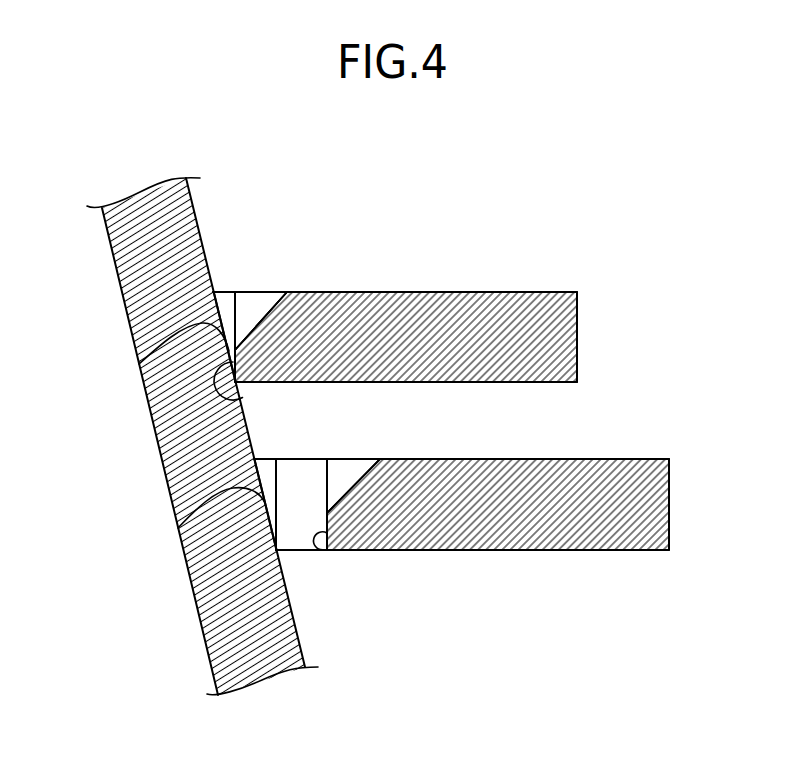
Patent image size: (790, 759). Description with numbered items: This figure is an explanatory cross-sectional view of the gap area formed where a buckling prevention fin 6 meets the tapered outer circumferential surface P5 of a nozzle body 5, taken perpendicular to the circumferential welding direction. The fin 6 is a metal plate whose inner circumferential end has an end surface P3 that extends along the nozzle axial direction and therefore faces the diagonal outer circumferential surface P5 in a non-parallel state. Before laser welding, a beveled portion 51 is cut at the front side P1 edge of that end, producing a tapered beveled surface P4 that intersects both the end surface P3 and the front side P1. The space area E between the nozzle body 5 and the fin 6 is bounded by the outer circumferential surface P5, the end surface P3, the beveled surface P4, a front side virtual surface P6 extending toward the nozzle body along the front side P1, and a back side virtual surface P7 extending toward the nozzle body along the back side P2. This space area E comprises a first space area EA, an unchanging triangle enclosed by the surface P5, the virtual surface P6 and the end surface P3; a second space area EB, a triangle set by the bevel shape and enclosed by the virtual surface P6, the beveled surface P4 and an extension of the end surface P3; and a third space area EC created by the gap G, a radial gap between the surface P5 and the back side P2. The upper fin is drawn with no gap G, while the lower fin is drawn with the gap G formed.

The nozzle body 5 is at (126, 315).
The buckling prevention fin 6 is at (463, 292).
The beveled portion 51 is at (286, 289).
The front side P1 is at (550, 292).
The back side P2 is at (541, 383).
The end surface P3 is at (243, 397).
The beveled surface P4 is at (287, 286).
The outer circumferential surface P5 is at (139, 364).
The front side virtual surface P6 is at (236, 282).
The back side virtual surface P7 is at (290, 552).
The space area E is at (248, 313).
The first space area EA is at (223, 305).
The second space area EB is at (263, 308).
The third space area EC is at (302, 553).
The gap G is at (308, 561).